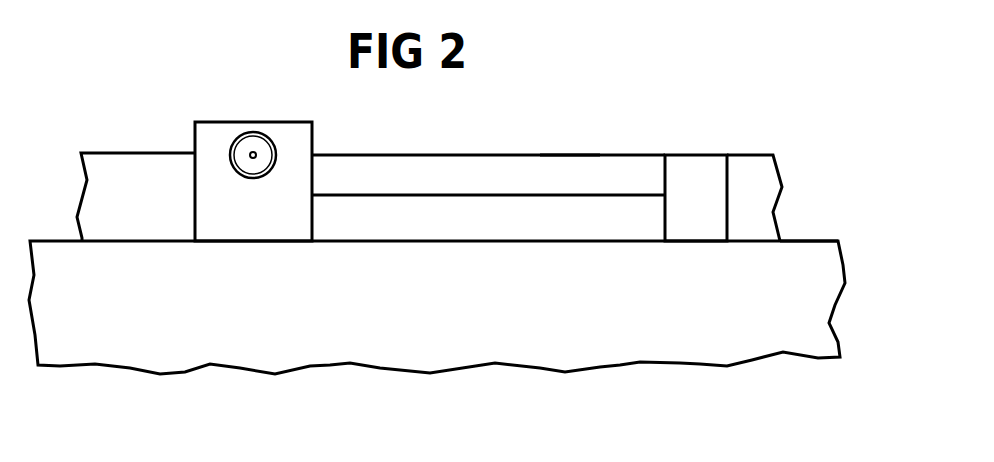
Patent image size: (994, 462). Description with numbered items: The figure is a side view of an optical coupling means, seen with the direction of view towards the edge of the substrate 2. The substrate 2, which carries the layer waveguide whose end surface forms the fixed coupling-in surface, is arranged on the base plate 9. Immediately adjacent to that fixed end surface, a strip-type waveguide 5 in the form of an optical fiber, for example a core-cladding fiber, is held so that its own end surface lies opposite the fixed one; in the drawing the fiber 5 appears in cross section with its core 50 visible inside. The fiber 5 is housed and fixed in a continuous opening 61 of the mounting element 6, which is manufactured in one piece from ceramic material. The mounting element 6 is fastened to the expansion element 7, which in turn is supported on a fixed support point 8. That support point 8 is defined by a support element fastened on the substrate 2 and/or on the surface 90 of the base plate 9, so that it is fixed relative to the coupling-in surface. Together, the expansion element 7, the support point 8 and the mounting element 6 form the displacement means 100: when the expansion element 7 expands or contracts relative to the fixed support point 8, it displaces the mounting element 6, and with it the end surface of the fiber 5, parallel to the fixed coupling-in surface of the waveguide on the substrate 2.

The substrate 2 is at (752, 175).
The strip-type waveguide 5 is at (270, 145).
The mounting element 6 is at (250, 223).
The expansion element 7 is at (477, 173).
The support point 8 is at (697, 175).
The base plate 9 is at (672, 337).
The fiber core 50 is at (253, 152).
The continuous opening 61 is at (237, 145).
The surface of the base plate 90 is at (803, 236).
The displacement means 100 is at (566, 154).